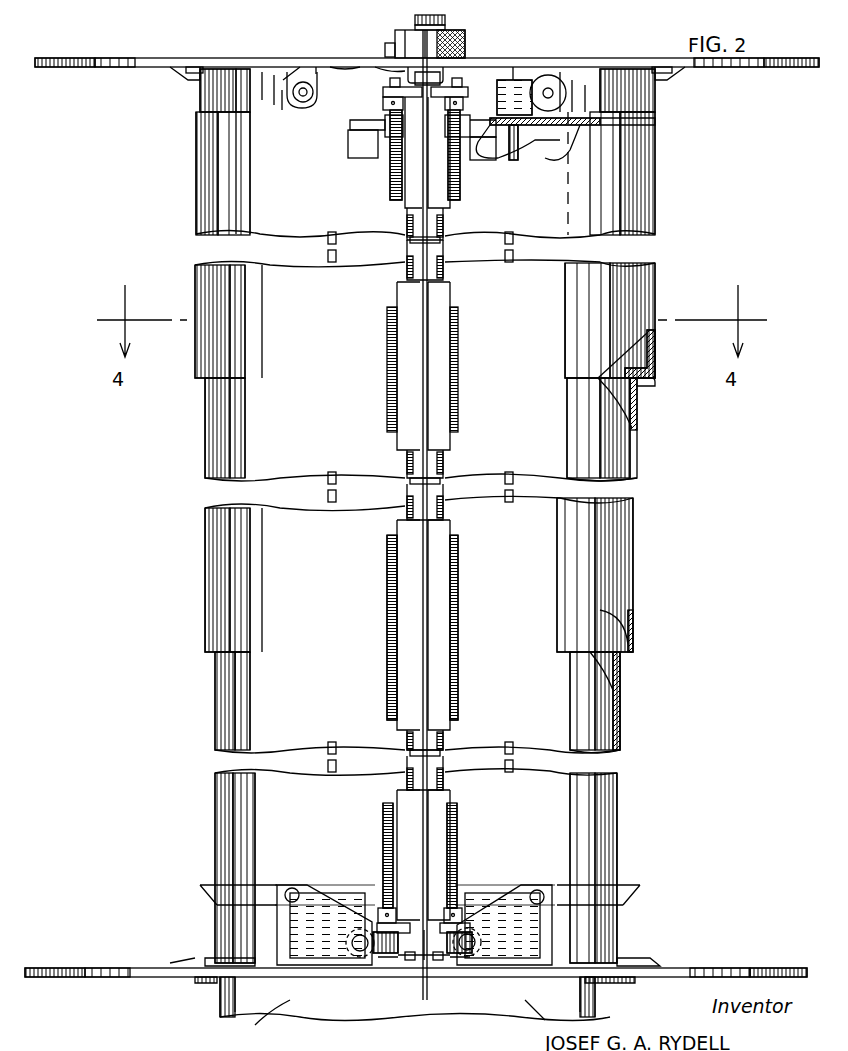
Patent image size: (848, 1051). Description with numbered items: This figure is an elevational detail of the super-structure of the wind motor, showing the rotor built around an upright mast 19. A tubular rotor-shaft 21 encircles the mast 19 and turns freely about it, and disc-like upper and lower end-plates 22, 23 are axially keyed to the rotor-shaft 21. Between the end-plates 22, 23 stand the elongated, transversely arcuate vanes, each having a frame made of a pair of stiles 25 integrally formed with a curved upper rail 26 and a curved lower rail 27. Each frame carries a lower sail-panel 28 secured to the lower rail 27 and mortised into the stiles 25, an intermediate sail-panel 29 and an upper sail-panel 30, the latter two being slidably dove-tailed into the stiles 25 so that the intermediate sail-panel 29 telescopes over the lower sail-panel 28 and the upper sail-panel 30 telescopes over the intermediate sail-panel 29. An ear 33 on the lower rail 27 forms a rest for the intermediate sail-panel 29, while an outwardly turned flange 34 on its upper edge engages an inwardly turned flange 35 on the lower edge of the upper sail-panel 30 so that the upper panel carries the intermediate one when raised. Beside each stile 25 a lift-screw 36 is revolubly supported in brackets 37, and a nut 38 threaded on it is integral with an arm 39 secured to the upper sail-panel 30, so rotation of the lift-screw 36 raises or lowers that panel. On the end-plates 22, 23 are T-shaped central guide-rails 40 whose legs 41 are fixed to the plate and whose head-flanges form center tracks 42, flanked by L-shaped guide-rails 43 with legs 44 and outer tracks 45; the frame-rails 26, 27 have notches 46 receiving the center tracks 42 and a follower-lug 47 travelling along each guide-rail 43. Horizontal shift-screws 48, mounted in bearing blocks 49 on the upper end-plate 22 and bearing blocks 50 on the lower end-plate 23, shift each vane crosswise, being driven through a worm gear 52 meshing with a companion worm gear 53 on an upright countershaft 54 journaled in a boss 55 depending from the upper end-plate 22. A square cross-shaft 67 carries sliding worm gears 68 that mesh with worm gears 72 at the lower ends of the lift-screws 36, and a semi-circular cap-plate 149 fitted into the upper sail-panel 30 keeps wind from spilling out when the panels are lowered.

The mast 19 is at (415, 20).
The tubular rotor-shaft 21 is at (466, 44).
The upper end-plate 22 is at (115, 68).
The lower end-plate 23 is at (106, 962).
The stiles 25 is at (405, 630).
The upper rail 26 is at (213, 100).
The lower rail 27 is at (226, 917).
The lower sail-panel 28 is at (232, 707).
The intermediate sail-panel 29 is at (225, 430).
The upper sail-panel 30 is at (203, 203).
The ear 33 is at (200, 889).
The outwardly turned flange 34 is at (655, 346).
The inwardly turned flange 35 is at (655, 384).
The lift-screw 36 is at (390, 582).
The brackets 37 is at (392, 91).
The nut 38 is at (392, 124).
The arm 39 is at (372, 137).
The central guide-rails 40 is at (385, 52).
The legs 41 is at (424, 962).
The center tracks 42 is at (410, 962).
The guide-rails 43 is at (186, 80).
The legs 44 is at (185, 966).
The outer tracks 45 is at (214, 958).
The notches 46 is at (398, 962).
The follower-lug 47 is at (200, 70).
The shift-screws 48 is at (302, 100).
The bearing blocks 49 is at (292, 80).
The bearing blocks 50 is at (298, 958).
The worm gear 52 is at (598, 126).
The worm gear 53 is at (530, 125).
The upright countershaft 54 is at (328, 498).
The boss 55 is at (320, 70).
The cross-shaft 67 is at (357, 955).
The sliding worm gears 68 is at (360, 932).
The worm gear 72 is at (385, 925).
The semi-circular cap-plate 149 is at (600, 128).